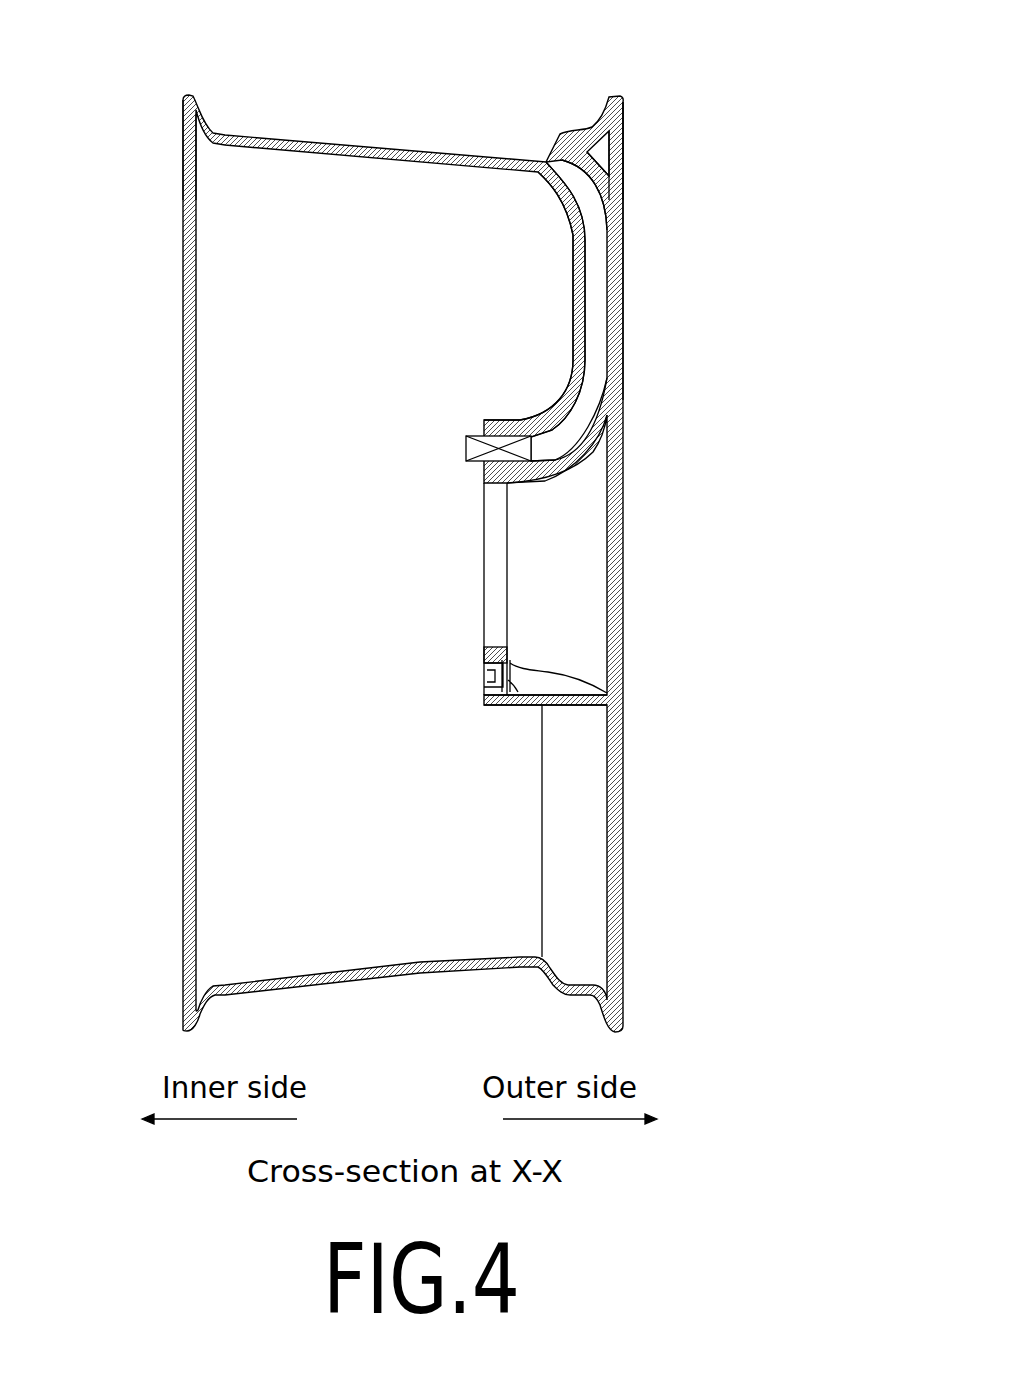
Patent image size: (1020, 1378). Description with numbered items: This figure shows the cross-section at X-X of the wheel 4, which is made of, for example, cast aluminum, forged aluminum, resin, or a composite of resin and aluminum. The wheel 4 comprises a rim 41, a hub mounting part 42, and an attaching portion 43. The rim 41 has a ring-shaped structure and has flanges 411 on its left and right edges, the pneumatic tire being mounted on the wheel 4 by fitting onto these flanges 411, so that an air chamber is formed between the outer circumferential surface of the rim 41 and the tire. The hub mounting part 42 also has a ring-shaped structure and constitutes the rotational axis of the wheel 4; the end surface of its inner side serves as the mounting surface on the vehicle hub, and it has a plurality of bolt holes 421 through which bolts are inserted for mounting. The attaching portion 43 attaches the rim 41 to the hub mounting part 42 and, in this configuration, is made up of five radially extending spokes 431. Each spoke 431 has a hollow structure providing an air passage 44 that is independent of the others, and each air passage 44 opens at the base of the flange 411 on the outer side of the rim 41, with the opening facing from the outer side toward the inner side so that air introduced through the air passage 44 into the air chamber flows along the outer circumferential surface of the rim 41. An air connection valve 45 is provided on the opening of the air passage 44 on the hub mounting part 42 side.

The wheel 4 is at (600, 50).
The rim 41 is at (378, 152).
The flange 411 is at (199, 103).
The hub mounting part 42 is at (485, 483).
The bolt hole 421 is at (523, 706).
The attaching portion 43 is at (620, 288).
The spoke 431 is at (625, 255).
The air passage 44 is at (593, 374).
The air connection valve 45 is at (466, 448).